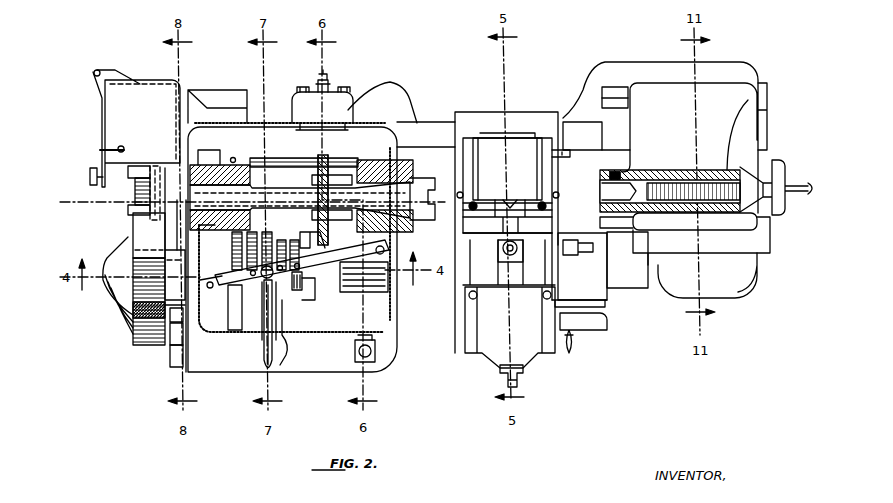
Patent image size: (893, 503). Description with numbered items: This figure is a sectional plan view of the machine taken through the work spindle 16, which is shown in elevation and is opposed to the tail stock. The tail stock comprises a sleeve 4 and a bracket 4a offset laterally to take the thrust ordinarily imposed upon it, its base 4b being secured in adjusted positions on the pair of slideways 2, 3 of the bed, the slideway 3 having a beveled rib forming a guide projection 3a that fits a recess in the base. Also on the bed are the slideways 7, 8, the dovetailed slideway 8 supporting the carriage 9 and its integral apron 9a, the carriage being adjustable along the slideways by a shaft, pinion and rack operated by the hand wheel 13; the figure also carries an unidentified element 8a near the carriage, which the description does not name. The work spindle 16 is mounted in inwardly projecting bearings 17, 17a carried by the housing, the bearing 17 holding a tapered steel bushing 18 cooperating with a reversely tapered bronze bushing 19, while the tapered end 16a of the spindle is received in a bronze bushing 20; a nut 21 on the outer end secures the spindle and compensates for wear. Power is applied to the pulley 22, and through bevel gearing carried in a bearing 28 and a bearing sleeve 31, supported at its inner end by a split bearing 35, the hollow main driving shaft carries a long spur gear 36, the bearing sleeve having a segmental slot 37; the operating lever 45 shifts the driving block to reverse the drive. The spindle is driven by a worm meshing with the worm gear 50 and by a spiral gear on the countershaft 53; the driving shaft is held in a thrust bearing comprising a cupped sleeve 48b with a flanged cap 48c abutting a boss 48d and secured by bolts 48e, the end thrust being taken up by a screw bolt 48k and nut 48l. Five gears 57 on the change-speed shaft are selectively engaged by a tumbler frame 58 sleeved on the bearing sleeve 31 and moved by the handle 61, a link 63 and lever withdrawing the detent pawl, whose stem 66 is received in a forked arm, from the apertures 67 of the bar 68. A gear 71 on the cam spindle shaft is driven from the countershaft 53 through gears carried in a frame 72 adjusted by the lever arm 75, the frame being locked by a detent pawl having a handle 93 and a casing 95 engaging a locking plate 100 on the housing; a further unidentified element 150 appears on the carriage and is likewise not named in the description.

The slideway 2 is at (770, 228).
The slideway 3 is at (766, 82).
The guide projection 3a is at (620, 92).
The sleeve 4 is at (640, 176).
The bracket 4a is at (717, 148).
The base 4b is at (727, 225).
The slideway 7 is at (596, 136).
The slideway 8 is at (627, 260).
The spindle housing 8a is at (520, 108).
The carriage 9 is at (579, 266).
The apron 9a is at (607, 303).
The hand wheel 13 is at (603, 330).
The work spindle 16 is at (288, 197).
The tapered end 16a is at (380, 160).
The bearing 17 is at (236, 165).
The bearing 17a is at (352, 160).
The tapered steel bushing 18 is at (250, 165).
The tapered bronze bushing 19 is at (215, 152).
The bronze bushing 20 is at (355, 248).
The nut 21 is at (177, 216).
The pulley 22 is at (112, 298).
The bearing 28 is at (175, 280).
The bearing sleeve 31 is at (313, 295).
The split bearing 35 is at (378, 292).
The long spur gear 36 is at (300, 295).
The segmental slot 37 is at (231, 307).
The operating lever 45 is at (375, 352).
The cupped sleeve 48b is at (322, 111).
The flanged cap 48c is at (348, 95).
The boss 48d is at (340, 112).
The bolts 48e is at (299, 94).
The screw bolt 48k is at (330, 80).
The nut 48l is at (312, 92).
The worm gear 50 is at (330, 178).
The countershaft 53 is at (280, 158).
The gears 57 is at (284, 245).
The tumbler frame 58 is at (262, 310).
The operating handle 61 is at (264, 355).
The link 63 is at (285, 340).
The stem 66 is at (262, 280).
The apertures 67 is at (222, 283).
The bar 68 is at (302, 262).
The gear 71 is at (145, 174).
The frame 72 is at (140, 192).
The lever arm 75 is at (128, 242).
The handle 93 is at (174, 357).
The casing 95 is at (172, 333).
The locking plate 100 is at (172, 315).
The nut 150 is at (505, 254).